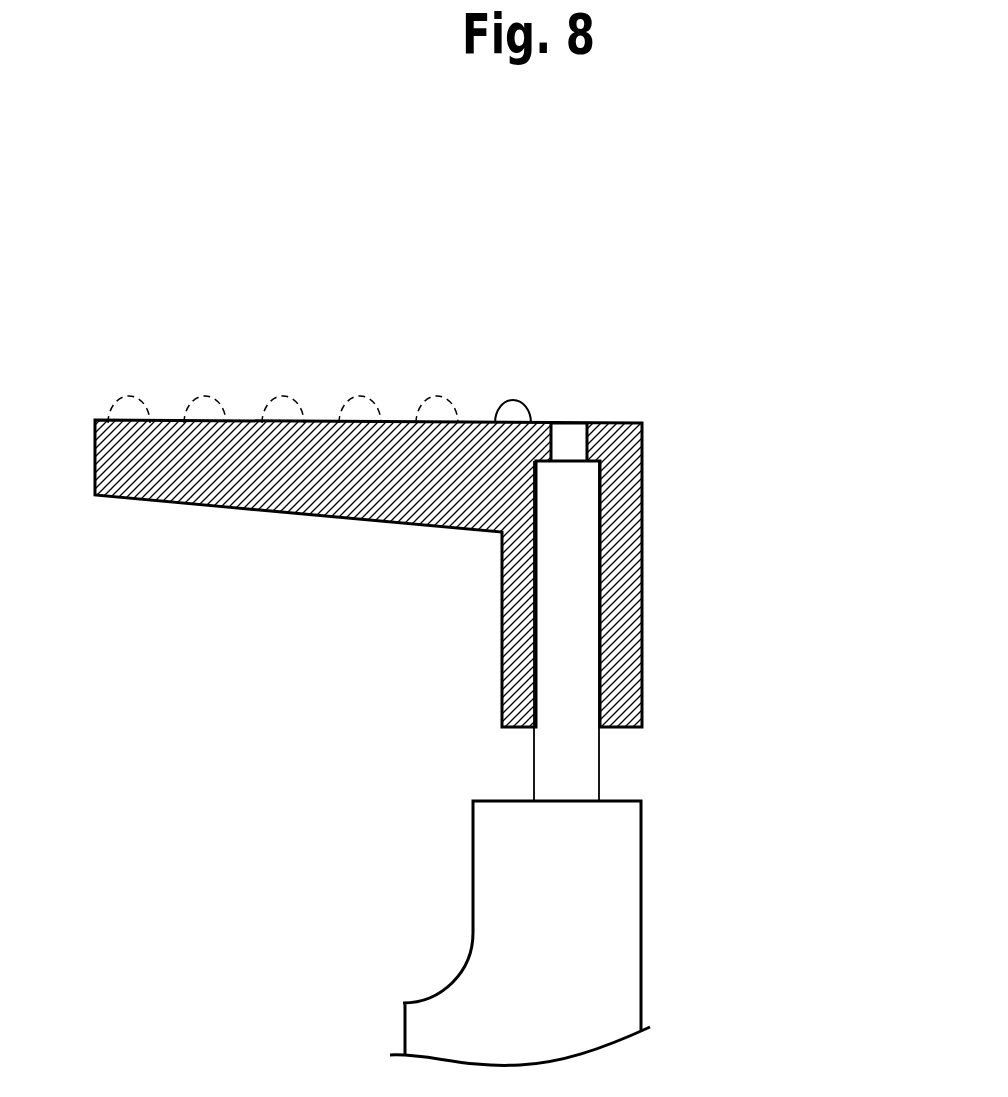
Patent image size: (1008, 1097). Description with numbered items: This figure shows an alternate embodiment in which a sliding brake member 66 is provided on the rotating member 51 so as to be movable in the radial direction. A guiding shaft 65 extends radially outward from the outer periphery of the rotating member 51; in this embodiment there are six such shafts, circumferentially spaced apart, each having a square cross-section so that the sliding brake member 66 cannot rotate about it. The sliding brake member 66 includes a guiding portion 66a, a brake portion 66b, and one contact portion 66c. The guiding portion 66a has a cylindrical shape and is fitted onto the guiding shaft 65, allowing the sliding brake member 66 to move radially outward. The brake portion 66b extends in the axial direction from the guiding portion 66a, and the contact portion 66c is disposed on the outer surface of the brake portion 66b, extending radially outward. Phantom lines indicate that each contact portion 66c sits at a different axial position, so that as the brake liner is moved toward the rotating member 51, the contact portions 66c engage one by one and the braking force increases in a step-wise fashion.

The sliding brake member 66 is at (471, 446).
The guiding portion 66a is at (622, 452).
The brake portion 66b is at (247, 467).
The contact portion 66c is at (510, 398).
The guiding shaft 65 is at (572, 662).
The rotating member 51 is at (568, 872).